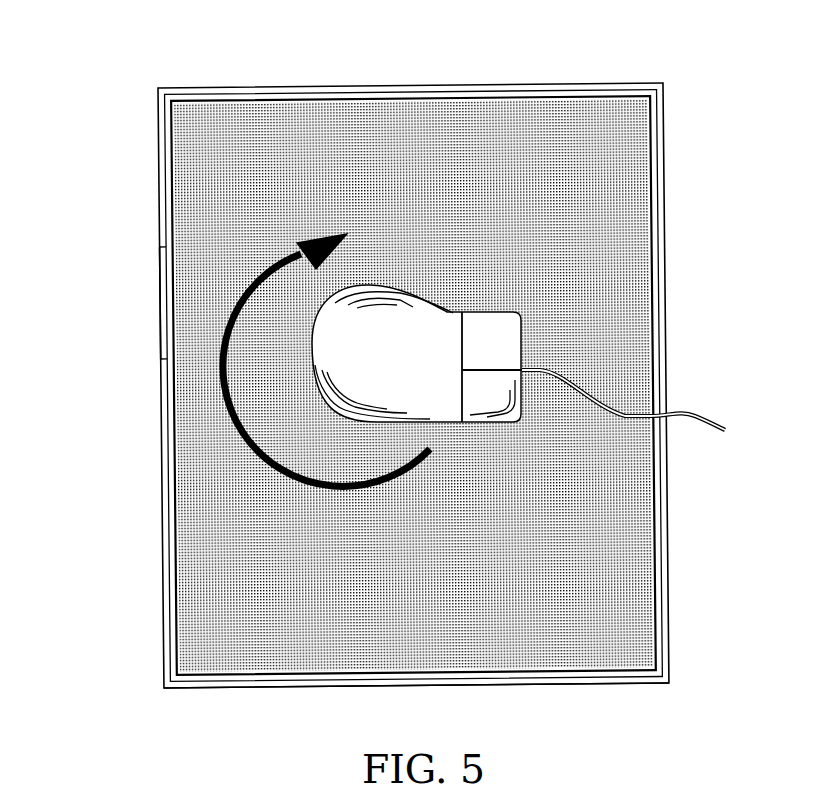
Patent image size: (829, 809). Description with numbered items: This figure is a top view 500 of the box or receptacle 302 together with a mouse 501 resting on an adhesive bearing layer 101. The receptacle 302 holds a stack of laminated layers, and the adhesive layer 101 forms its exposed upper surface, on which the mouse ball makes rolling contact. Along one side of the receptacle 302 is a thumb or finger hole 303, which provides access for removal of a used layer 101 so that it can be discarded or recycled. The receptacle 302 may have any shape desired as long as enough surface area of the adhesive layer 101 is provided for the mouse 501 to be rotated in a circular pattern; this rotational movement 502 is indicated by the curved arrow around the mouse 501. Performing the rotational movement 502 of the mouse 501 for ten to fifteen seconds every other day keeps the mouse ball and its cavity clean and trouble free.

The top view 500 is at (638, 65).
The adhesive layer 101 is at (413, 385).
The thumb or finger hole 303 is at (162, 346).
The box or receptacle 302 is at (562, 683).
The mouse 501 is at (415, 369).
The rotational movement 502 is at (276, 472).